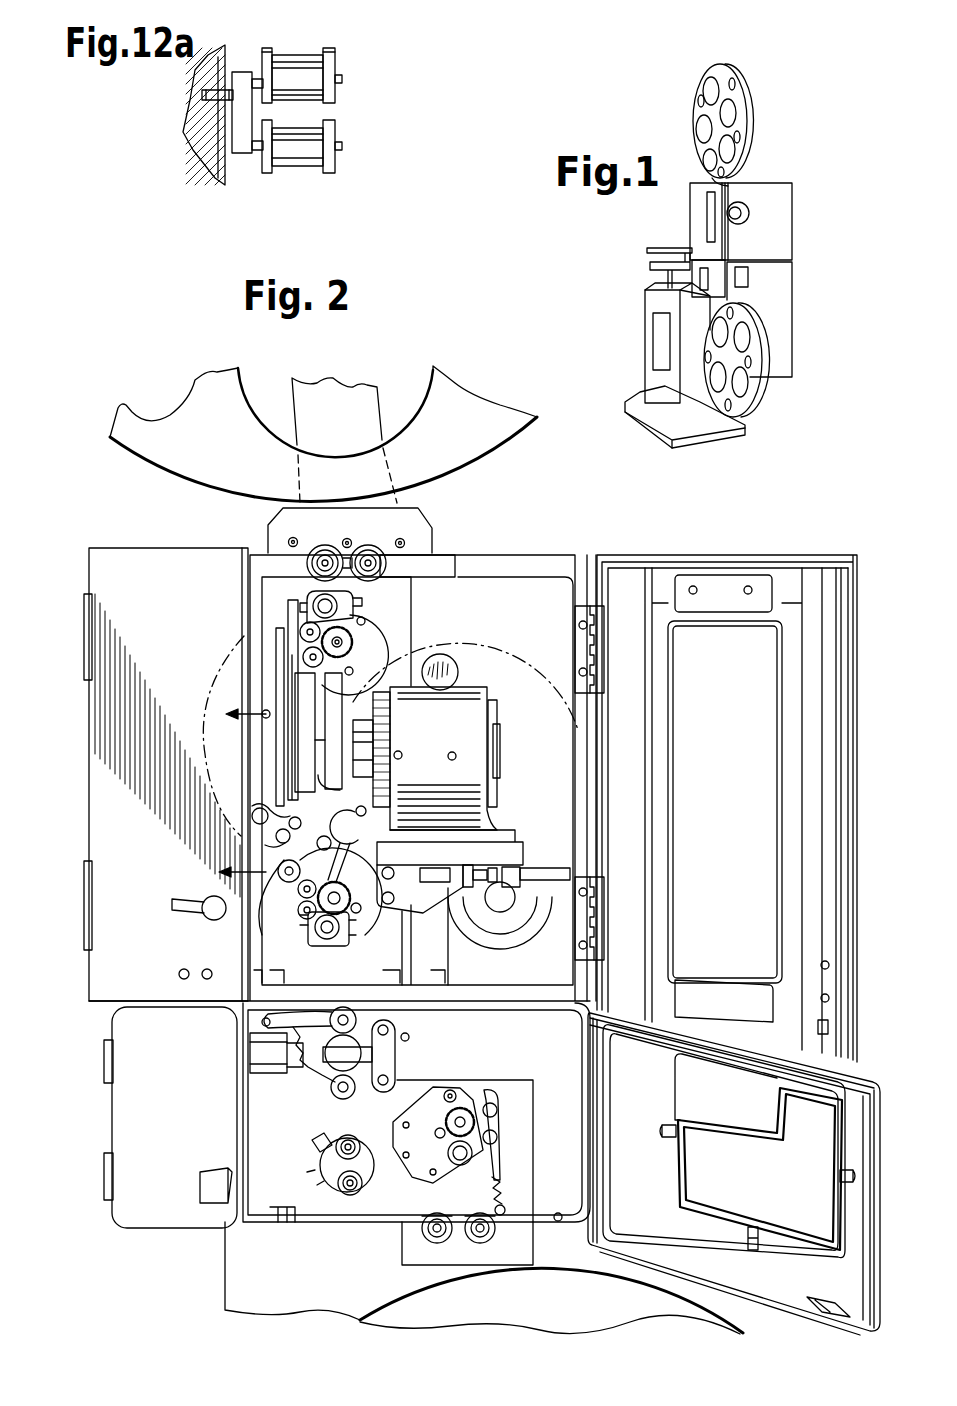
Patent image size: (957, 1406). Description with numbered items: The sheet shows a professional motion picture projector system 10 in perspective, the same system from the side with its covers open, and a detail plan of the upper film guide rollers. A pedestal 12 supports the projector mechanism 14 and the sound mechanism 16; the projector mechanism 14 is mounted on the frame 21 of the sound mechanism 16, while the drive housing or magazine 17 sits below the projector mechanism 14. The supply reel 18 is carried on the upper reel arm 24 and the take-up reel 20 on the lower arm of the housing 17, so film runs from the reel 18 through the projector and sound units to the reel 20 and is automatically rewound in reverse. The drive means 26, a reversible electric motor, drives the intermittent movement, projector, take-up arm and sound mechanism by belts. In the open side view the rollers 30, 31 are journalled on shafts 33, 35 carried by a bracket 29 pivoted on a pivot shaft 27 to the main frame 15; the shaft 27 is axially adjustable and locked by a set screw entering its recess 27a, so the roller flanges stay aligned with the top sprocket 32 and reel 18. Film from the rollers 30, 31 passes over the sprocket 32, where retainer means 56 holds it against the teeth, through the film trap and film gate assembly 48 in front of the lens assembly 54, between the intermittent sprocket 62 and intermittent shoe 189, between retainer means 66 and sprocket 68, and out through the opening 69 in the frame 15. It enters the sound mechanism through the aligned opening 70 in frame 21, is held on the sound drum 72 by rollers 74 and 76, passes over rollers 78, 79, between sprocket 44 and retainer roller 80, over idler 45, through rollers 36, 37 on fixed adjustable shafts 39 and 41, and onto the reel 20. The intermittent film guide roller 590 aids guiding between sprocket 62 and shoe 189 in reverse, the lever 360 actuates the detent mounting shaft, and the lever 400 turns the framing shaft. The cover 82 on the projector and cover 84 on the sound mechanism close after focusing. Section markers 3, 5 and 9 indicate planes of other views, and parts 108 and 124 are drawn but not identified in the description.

In FIG. 2, the section line 3 is at (494, 636).
In FIG. 2, the section line 5 is at (232, 635).
In FIG. 2, the section line 9 is at (244, 787).
In FIG. 1, the motion picture projector system 10 is at (818, 232).
In FIG. 1, the pedestal 12 is at (660, 433).
In FIG. 1, the projector mechanism 14 is at (790, 192).
In FIG. 2, the projector mechanism 14 is at (582, 556).
In FIG. 12A, the main frame 15 is at (222, 50).
In FIG. 2, the main frame 15 is at (400, 608).
In FIG. 1, the sound mechanism 16 is at (645, 296).
In FIG. 2, the sound mechanism 16 is at (200, 1230).
In FIG. 1, the drive housing 17 is at (783, 297).
In FIG. 1, the reel 18 is at (748, 105).
In FIG. 2, the reel 18 is at (460, 457).
In FIG. 1, the take-up reel 20 is at (760, 404).
In FIG. 2, the take-up reel 20 is at (673, 1310).
In FIG. 2, the frame 21 is at (256, 1225).
In FIG. 2, the upper reel arm 24 is at (400, 520).
In FIG. 2, the drive means 26 is at (527, 932).
In FIG. 12A, the pivot shaft 27 is at (243, 72).
In FIG. 12A, the recess 27a is at (190, 155).
In FIG. 12A, the bracket 29 is at (306, 62).
In FIG. 2, the bracket 29 is at (350, 553).
In FIG. 12A, the guide roller 30 is at (306, 152).
In FIG. 2, the guide roller 30 is at (320, 550).
In FIG. 12A, the guide roller 31 is at (314, 50).
In FIG. 2, the guide roller 31 is at (372, 553).
In FIG. 2, the top sprocket 32 is at (350, 642).
In FIG. 12A, the shaft 33 is at (344, 138).
In FIG. 2, the shaft 33 is at (300, 555).
In FIG. 12A, the shaft 35 is at (344, 80).
In FIG. 2, the shaft 35 is at (425, 560).
In FIG. 2, the roller 36 is at (423, 1230).
In FIG. 2, the roller 37 is at (477, 1238).
In FIG. 2, the shaft 39 is at (430, 1240).
In FIG. 2, the shaft 41 is at (484, 1240).
In FIG. 2, the sprocket 44 is at (462, 1108).
In FIG. 2, the idler 45 is at (460, 1165).
In FIG. 2, the film trap and film gate assembly 48 is at (239, 724).
In FIG. 2, the lens assembly 54 is at (467, 707).
In FIG. 2, the retainer means 56 is at (295, 608).
In FIG. 2, the intermittent sprocket 62 is at (256, 826).
In FIG. 2, the retainer means 66 is at (310, 940).
In FIG. 2, the sprocket 68 is at (342, 900).
In FIG. 2, the opening 69 is at (400, 966).
In FIG. 2, the opening 70 is at (385, 1018).
In FIG. 2, the sound drum 72 is at (332, 1082).
In FIG. 2, the roller 74 is at (340, 1006).
In FIG. 2, the roller 76 is at (347, 1090).
In FIG. 2, the roller 78 is at (354, 1150).
In FIG. 2, the roller 79 is at (347, 1192).
In FIG. 2, the retainer roller 80 is at (493, 1107).
In FIG. 2, the cover 82 is at (780, 578).
In FIG. 2, the cover 84 is at (862, 1080).
In FIG. 2, the ball 108 is at (472, 664).
In FIG. 2, the rod 124 is at (565, 872).
In FIG. 2, the intermittent shoe 189 is at (302, 906).
In FIG. 2, the lever 360 is at (380, 817).
In FIG. 2, the lever 400 is at (200, 914).
In FIG. 2, the intermittent film guide roller 590 is at (290, 918).